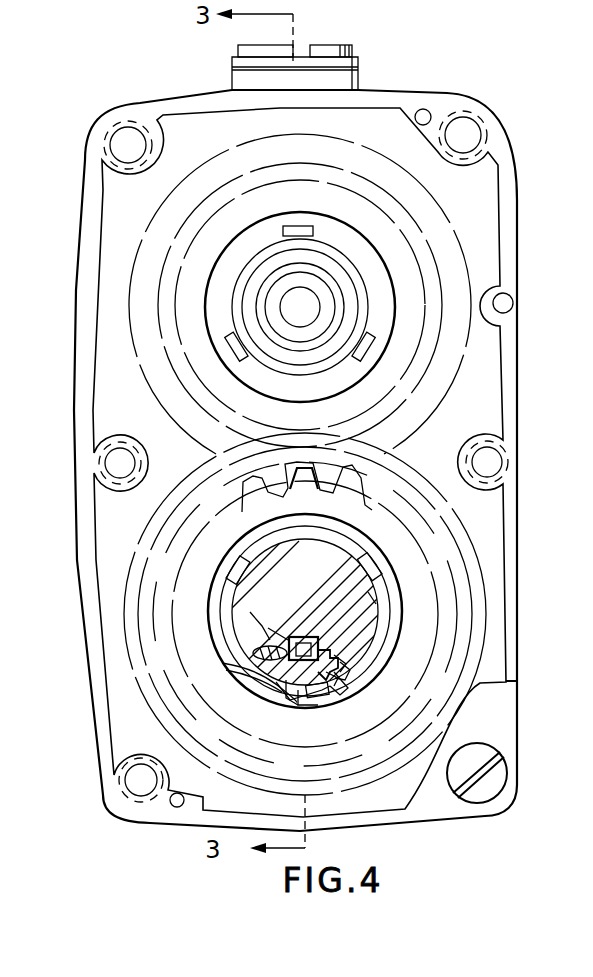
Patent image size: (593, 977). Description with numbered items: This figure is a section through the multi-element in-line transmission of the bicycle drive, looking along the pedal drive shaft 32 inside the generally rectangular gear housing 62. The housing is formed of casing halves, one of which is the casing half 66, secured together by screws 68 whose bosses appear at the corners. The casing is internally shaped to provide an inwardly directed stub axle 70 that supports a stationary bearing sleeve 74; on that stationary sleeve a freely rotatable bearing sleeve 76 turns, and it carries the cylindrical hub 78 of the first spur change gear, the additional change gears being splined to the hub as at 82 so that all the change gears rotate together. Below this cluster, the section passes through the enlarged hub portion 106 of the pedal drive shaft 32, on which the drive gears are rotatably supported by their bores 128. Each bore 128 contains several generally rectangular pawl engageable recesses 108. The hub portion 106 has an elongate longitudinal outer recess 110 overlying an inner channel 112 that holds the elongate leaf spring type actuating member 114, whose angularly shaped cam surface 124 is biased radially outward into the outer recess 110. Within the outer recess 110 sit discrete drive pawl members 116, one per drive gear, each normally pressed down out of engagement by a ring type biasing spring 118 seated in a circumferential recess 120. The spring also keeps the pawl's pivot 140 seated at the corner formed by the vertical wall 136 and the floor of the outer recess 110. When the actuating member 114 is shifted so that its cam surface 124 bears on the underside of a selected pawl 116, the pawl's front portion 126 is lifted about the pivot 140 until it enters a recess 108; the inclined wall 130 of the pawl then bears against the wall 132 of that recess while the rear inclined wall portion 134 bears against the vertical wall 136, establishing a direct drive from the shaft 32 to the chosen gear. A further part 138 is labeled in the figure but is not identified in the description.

The pedal drive shaft 32 is at (322, 612).
The gear housing 62 is at (531, 724).
The casing half 66 is at (446, 800).
The screws 68 is at (142, 138).
The stub axle 70 is at (326, 308).
The stationary bearing sleeve 74 is at (335, 288).
The rotatable bearing sleeve 76 is at (338, 270).
The cylindrical hub 78 is at (330, 248).
The spline 82 is at (303, 226).
The enlarged hub portion 106 is at (290, 580).
The pawl engageable recesses 108 is at (240, 568).
The outer recess 110 is at (283, 676).
The channel 112 is at (253, 615).
The leaf spring type actuating member 114 is at (294, 633).
The drive pawl members 116 is at (290, 692).
The ring type biasing springs 118 is at (342, 690).
The circumferential recesses 120 is at (384, 615).
The cam surface 124 is at (314, 636).
The front portion of pawl 126 is at (300, 690).
The bore 128 is at (373, 598).
The inclined wall 130 is at (287, 682).
The wall of the recess 132 is at (255, 650).
The rear inclined wall portion 134 is at (337, 660).
The vertical wall 136 is at (332, 668).
The pivot 138 is at (304, 700).
The pivot 140 is at (330, 676).